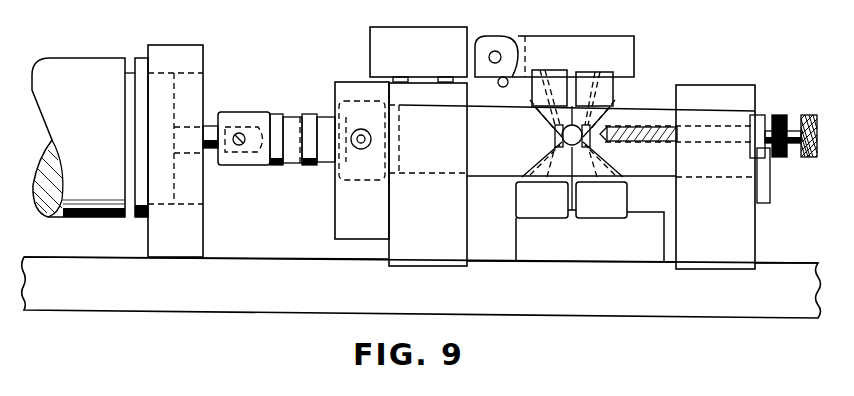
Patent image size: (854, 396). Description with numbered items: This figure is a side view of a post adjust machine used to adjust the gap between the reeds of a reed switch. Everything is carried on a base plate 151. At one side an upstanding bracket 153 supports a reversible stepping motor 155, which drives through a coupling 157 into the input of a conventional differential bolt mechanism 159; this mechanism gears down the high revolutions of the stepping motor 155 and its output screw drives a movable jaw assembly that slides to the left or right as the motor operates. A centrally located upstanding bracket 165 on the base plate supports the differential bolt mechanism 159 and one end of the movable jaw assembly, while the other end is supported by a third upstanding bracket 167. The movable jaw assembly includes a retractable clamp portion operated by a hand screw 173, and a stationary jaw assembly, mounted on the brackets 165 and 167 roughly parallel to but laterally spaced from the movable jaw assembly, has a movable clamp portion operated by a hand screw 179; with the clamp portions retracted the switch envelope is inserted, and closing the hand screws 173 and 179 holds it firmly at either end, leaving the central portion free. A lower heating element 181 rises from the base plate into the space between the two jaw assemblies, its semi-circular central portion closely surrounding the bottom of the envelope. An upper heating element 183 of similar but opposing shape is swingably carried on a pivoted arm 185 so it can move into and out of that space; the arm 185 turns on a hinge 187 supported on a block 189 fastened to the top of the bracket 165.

The base plate 151 is at (265, 259).
The upstanding bracket 153 is at (200, 58).
The reversible stepping motor 155 is at (97, 61).
The coupling 157 is at (247, 114).
The differential bolt mechanism 159 is at (389, 107).
The centrally located upstanding bracket 165 is at (393, 222).
The third upstanding bracket 167 is at (748, 228).
The hand screw 173 is at (784, 115).
The hand screw 179 is at (809, 158).
The lower heating element 181 is at (571, 219).
The upper heating element 183 is at (600, 78).
The pivoted arm 185 is at (636, 52).
The hinge 187 is at (475, 45).
The block 189 is at (370, 46).